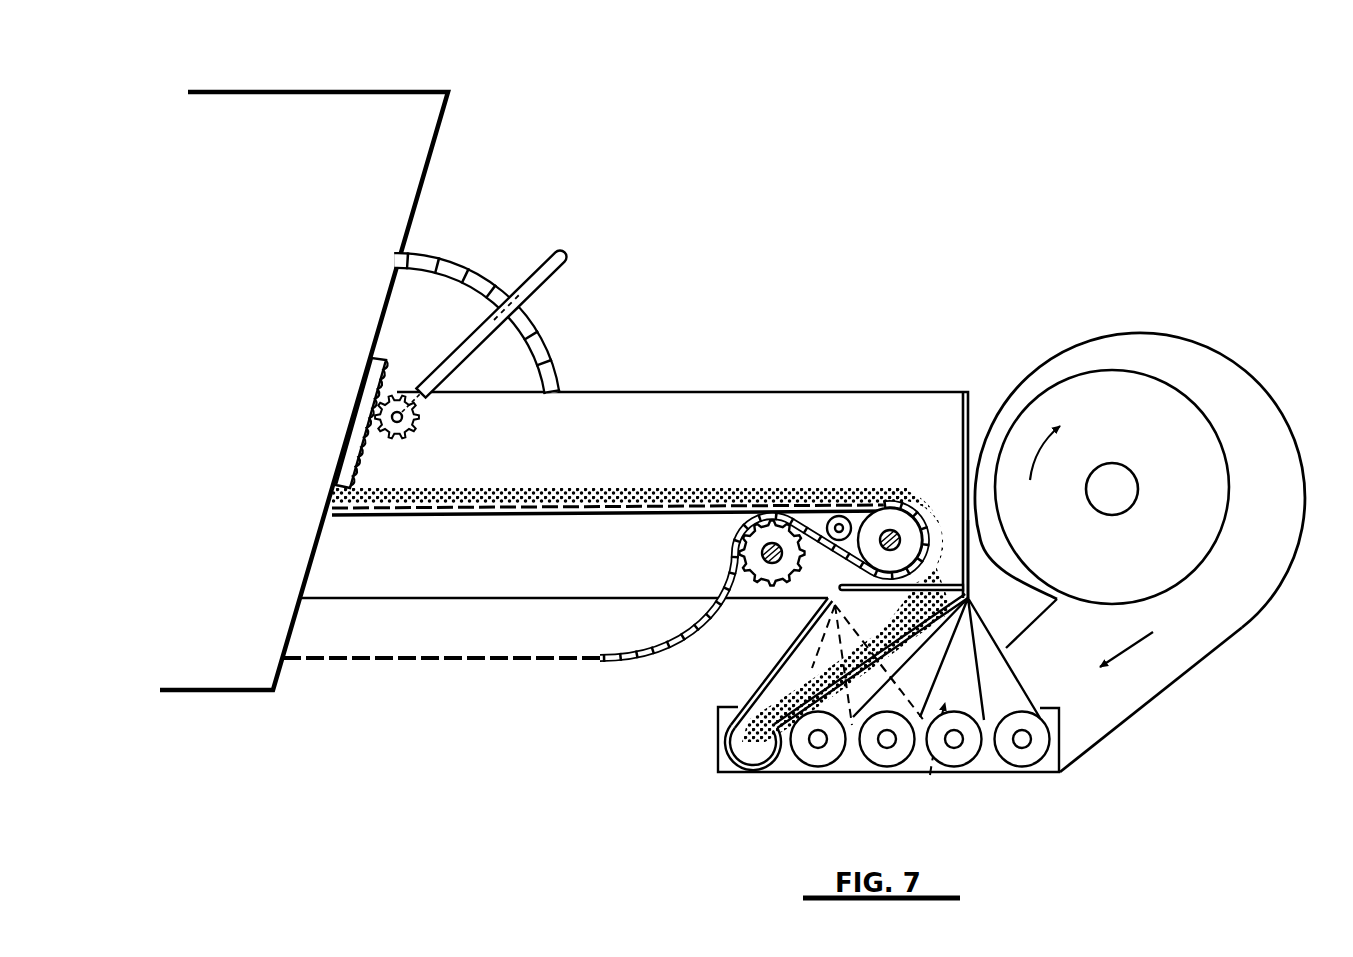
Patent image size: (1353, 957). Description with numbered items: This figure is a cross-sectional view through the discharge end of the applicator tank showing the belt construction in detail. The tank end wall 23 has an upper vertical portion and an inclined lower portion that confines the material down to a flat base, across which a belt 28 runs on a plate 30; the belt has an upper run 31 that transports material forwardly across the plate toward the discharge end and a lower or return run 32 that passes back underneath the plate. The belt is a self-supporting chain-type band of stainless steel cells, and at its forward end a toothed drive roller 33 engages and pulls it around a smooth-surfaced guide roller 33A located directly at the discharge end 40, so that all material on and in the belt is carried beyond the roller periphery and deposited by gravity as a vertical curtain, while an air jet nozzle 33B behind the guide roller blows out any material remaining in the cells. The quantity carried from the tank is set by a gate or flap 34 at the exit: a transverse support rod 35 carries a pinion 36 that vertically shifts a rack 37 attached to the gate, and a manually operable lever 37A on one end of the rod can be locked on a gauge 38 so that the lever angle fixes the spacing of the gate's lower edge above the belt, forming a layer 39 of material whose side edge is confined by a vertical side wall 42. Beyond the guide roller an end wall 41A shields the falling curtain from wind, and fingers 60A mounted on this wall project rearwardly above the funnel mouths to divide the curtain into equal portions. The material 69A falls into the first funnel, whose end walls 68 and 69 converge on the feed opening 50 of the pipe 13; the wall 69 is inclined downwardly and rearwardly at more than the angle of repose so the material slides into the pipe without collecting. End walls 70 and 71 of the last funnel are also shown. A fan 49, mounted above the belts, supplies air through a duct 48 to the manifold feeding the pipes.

The pipe 13 is at (732, 773).
The end wall 23 is at (433, 158).
The belt 28 is at (660, 500).
The plate 30 is at (520, 517).
The upper run 31 is at (616, 563).
The return run 32 is at (414, 663).
The drive roller 33 is at (756, 538).
The guide roller 33A is at (896, 512).
The air jet nozzle 33B is at (827, 512).
The gate 34 is at (358, 433).
The transverse support rod 35 is at (405, 424).
The pinion 36 is at (420, 416).
The rack 37 is at (373, 450).
The lever 37A is at (553, 279).
The gauge 38 is at (552, 338).
The layer 39 is at (563, 487).
The discharge end 40 is at (950, 505).
The end wall 41A is at (973, 540).
The side wall 42 is at (782, 417).
The duct 48 is at (1127, 688).
The fan 49 is at (1248, 413).
The feed opening 50 is at (772, 703).
The fingers 60A is at (836, 582).
The end wall 68 is at (795, 640).
The end wall 69 is at (847, 725).
The material 69A is at (752, 738).
The end wall 70 is at (930, 775).
The end wall 71 is at (1022, 670).